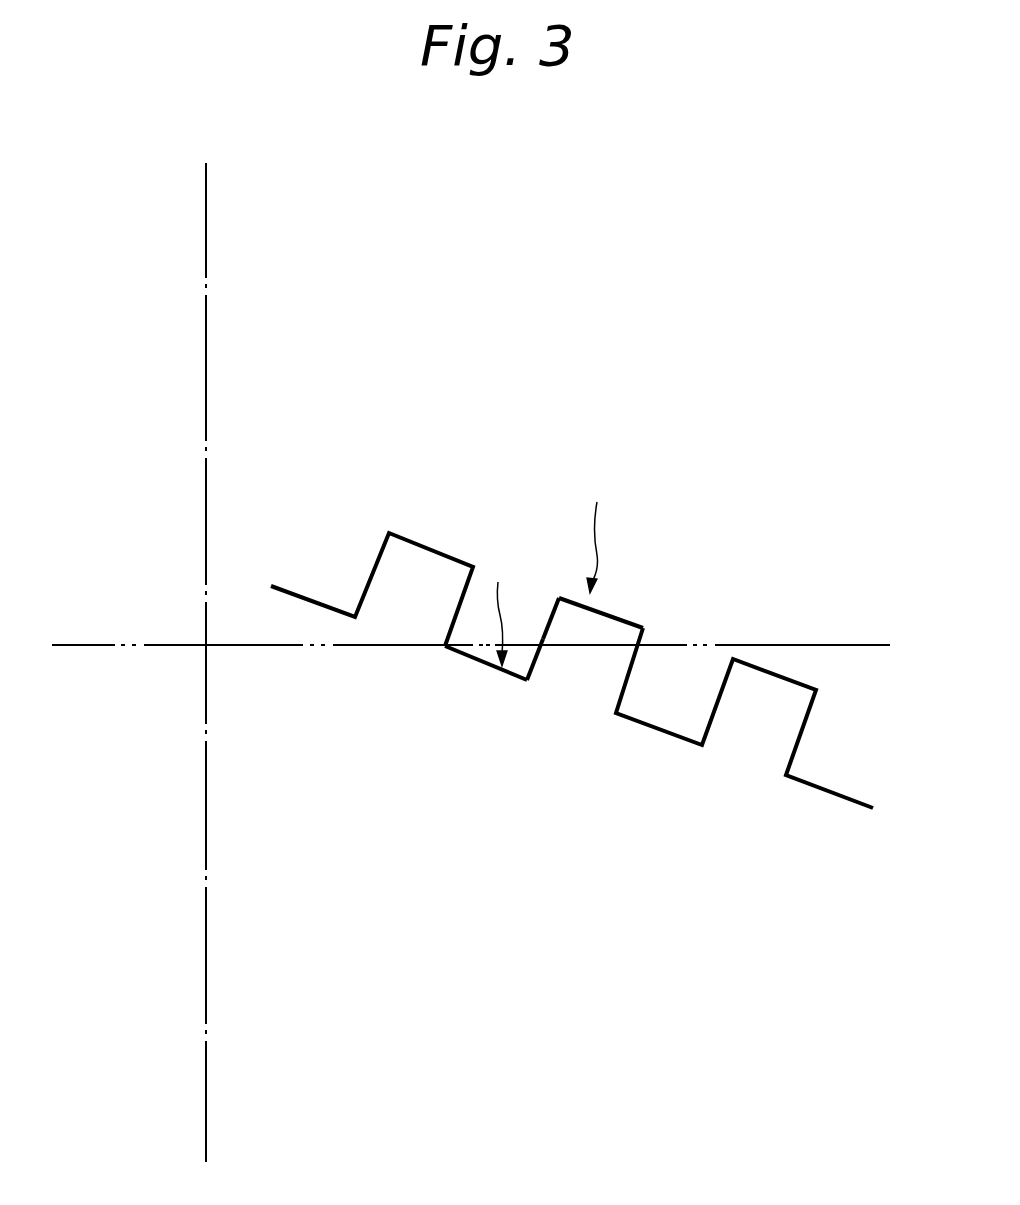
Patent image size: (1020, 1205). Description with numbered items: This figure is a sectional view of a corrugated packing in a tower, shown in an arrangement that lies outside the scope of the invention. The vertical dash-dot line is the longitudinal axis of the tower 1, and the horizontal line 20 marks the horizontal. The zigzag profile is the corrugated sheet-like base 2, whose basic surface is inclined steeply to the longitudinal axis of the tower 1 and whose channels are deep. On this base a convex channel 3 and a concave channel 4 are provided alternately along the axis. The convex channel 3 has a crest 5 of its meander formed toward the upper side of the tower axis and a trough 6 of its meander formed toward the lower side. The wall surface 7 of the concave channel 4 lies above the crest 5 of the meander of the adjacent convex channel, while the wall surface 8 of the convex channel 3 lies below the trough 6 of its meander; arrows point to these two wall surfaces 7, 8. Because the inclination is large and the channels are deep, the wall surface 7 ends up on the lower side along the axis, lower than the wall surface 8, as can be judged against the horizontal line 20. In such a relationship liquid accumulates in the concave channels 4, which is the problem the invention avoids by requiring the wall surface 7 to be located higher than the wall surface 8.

The longitudinal axis of the tower 1 is at (208, 204).
The corrugated sheet-like base 2 is at (300, 598).
The convex channel 3 is at (635, 622).
The concave channel 4 is at (458, 656).
The crest of the meander of the convex channel 5 is at (528, 683).
The trough of the meander of the convex channel 6 is at (558, 596).
The wall surface of the concave channel 7 is at (498, 609).
The wall surface of the convex channel 8 is at (597, 530).
The horizontal line 20 is at (857, 643).